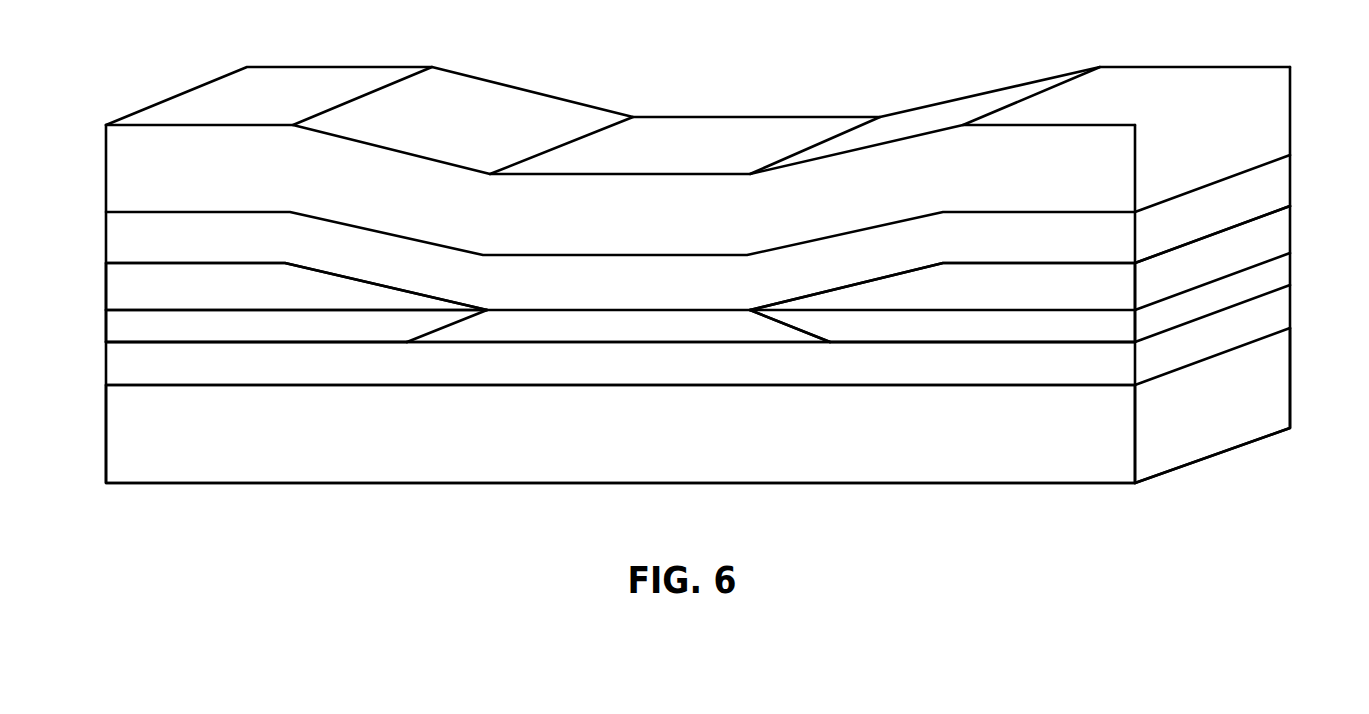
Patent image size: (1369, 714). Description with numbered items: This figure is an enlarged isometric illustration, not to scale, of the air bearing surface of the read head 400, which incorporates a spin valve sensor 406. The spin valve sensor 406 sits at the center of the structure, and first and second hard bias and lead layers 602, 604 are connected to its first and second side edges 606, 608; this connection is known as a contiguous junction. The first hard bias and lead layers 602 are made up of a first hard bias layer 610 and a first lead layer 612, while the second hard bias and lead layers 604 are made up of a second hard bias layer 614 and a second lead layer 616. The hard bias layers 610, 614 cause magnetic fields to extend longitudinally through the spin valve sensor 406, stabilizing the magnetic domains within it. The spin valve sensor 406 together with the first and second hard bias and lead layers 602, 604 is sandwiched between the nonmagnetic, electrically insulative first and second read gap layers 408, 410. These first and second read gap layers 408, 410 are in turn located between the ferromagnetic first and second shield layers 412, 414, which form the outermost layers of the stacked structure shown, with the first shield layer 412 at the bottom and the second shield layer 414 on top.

The read head 400 is at (783, 70).
The spin valve sensor 406 is at (519, 298).
The first read gap layer 408 is at (997, 370).
The second read gap layer 410 is at (348, 245).
The first shield layer 412 is at (272, 485).
The second shield layer 414 is at (540, 107).
The first hard bias and lead layers 602 is at (100, 263).
The second hard bias and lead layers 604 is at (1293, 203).
The first side edge 606 is at (432, 325).
The second side edge 608 is at (807, 327).
The first hard bias layer 610 is at (140, 323).
The first lead layer 612 is at (147, 285).
The second hard bias layer 614 is at (1072, 320).
The second lead layer 616 is at (1080, 282).